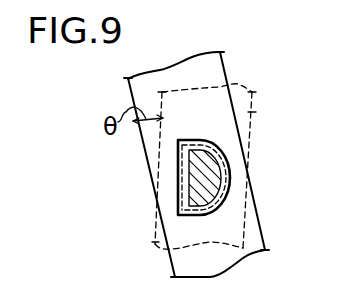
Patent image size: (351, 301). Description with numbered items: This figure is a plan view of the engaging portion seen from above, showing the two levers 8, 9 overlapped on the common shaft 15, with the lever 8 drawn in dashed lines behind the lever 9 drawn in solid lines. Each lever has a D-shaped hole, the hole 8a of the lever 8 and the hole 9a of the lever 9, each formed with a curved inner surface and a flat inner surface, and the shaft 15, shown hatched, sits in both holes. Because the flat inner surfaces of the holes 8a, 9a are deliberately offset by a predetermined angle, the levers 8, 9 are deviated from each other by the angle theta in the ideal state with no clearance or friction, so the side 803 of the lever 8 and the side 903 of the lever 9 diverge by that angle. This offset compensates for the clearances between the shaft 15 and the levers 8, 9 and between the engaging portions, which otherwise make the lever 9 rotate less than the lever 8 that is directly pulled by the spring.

The lever 8 is at (195, 183).
The hole of the lever 8a is at (180, 149).
The lever 9 is at (177, 164).
The hole of the lever 9a is at (178, 200).
The shaft 15 is at (178, 170).
The side of the lever 803 is at (150, 243).
The side of the lever 903 is at (128, 86).